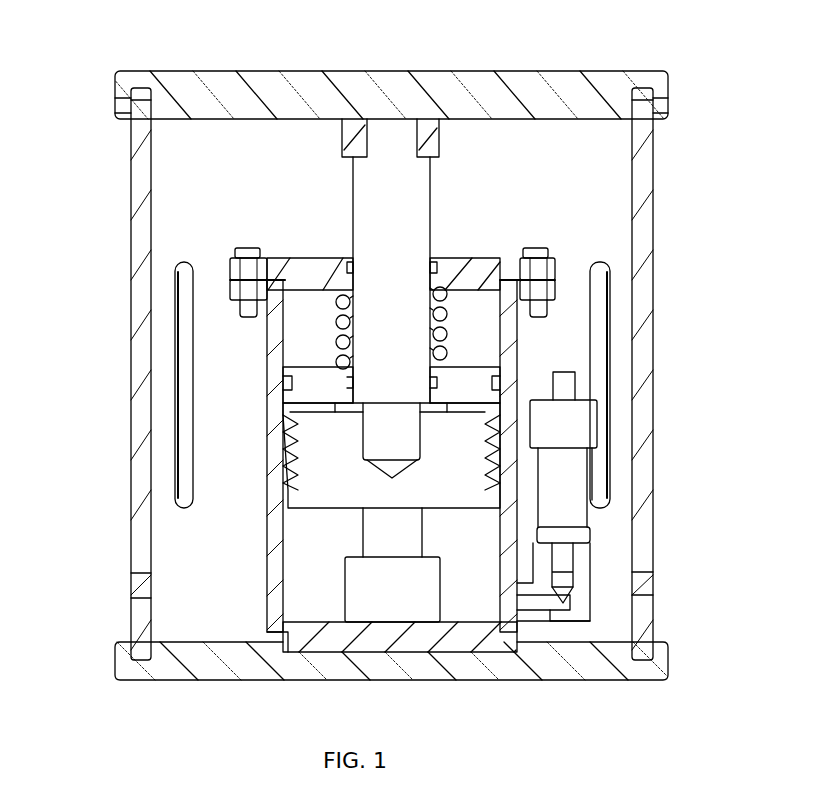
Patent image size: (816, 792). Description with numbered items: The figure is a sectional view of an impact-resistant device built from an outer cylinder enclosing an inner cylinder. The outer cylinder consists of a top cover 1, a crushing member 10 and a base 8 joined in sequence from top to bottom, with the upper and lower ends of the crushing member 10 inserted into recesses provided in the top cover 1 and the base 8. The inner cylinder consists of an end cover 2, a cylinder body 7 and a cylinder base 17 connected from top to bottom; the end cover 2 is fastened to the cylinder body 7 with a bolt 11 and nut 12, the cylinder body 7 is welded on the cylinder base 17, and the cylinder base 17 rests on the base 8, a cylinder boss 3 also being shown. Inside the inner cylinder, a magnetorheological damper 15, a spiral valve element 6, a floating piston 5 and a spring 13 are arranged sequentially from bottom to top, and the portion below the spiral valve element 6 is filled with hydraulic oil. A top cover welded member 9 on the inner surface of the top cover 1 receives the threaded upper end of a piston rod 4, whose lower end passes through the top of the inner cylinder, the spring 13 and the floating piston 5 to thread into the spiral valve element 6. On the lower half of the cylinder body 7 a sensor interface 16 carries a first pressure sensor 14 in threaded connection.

The top cover 1 is at (205, 105).
The end cover 2 is at (289, 271).
The cylinder boss 3 is at (233, 288).
The piston rod 4 is at (363, 363).
The floating piston 5 is at (318, 390).
The spiral valve element 6 is at (330, 470).
The cylinder body 7 is at (282, 570).
The base 8 is at (253, 661).
The top cover welded member 9 is at (432, 135).
The crushing member 10 is at (642, 165).
The bolt 11 is at (537, 258).
The nut 12 is at (545, 300).
The spring 13 is at (445, 352).
The first pressure sensor 14 is at (577, 465).
The magnetorheological damper 15 is at (400, 540).
The sensor interface 16 is at (583, 563).
The cylinder base 17 is at (480, 642).